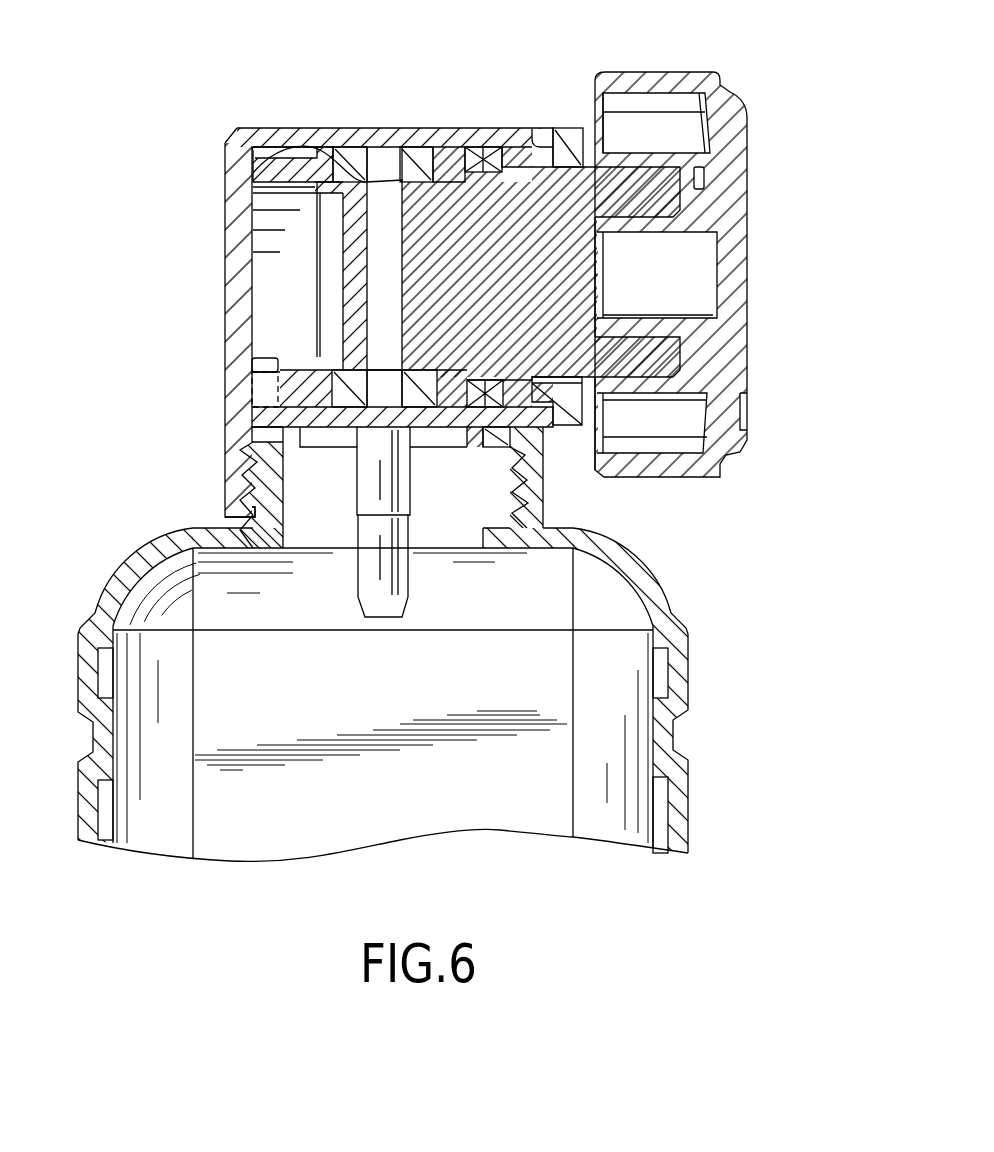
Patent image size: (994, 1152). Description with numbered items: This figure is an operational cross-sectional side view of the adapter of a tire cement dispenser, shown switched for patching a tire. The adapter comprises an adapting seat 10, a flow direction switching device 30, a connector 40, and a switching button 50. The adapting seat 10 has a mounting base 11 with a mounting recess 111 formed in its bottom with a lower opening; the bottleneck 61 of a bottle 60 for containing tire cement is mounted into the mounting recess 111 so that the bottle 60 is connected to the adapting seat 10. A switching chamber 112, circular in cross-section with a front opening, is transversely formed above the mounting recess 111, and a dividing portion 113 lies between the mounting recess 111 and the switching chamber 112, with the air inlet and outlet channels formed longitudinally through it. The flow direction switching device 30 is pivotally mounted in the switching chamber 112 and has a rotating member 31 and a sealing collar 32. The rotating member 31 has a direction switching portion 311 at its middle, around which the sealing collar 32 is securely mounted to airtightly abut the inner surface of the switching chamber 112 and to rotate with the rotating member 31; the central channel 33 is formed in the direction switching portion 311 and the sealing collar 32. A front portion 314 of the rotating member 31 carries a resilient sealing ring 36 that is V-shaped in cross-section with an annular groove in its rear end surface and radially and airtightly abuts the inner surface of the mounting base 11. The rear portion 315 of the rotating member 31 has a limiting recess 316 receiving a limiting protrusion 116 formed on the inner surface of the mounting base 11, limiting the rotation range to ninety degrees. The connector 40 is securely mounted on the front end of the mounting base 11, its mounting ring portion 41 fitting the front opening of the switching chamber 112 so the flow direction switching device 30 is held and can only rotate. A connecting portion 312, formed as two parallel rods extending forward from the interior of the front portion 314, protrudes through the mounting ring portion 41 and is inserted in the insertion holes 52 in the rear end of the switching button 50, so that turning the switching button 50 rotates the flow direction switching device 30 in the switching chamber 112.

The adapting seat 10 is at (198, 163).
The mounting base 11 is at (272, 135).
The switching chamber 112 is at (291, 165).
The rear portion 315 is at (307, 165).
The direction switching portion 311 is at (373, 207).
The central channel 33 is at (352, 180).
The sealing collar 32 is at (410, 145).
The rotating member 31 is at (457, 137).
The sealing ring 36 is at (480, 149).
The front portion 314 is at (513, 155).
The connecting portion 312 is at (641, 161).
The switching button 50 is at (747, 89).
The insertion holes 52 is at (700, 168).
The limiting protrusion 116 is at (268, 356).
The limiting recess 316 is at (268, 392).
The flow direction switching device 30 is at (279, 403).
The bottleneck 61 is at (268, 468).
The mounting recess 111 is at (238, 497).
The bottle 60 is at (137, 541).
The dividing portion 113 is at (343, 427).
The connector 40 is at (573, 430).
The mounting ring portion 41 is at (572, 407).